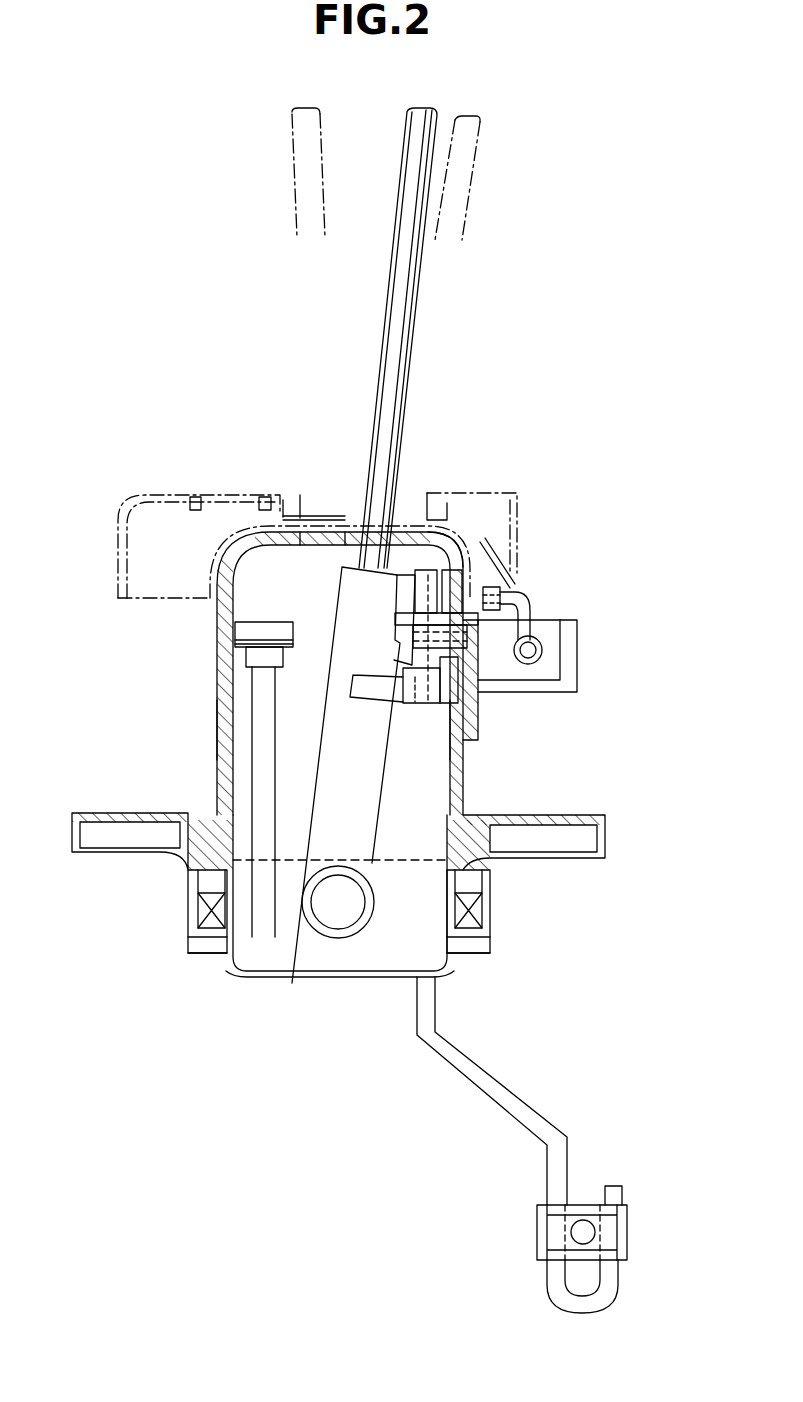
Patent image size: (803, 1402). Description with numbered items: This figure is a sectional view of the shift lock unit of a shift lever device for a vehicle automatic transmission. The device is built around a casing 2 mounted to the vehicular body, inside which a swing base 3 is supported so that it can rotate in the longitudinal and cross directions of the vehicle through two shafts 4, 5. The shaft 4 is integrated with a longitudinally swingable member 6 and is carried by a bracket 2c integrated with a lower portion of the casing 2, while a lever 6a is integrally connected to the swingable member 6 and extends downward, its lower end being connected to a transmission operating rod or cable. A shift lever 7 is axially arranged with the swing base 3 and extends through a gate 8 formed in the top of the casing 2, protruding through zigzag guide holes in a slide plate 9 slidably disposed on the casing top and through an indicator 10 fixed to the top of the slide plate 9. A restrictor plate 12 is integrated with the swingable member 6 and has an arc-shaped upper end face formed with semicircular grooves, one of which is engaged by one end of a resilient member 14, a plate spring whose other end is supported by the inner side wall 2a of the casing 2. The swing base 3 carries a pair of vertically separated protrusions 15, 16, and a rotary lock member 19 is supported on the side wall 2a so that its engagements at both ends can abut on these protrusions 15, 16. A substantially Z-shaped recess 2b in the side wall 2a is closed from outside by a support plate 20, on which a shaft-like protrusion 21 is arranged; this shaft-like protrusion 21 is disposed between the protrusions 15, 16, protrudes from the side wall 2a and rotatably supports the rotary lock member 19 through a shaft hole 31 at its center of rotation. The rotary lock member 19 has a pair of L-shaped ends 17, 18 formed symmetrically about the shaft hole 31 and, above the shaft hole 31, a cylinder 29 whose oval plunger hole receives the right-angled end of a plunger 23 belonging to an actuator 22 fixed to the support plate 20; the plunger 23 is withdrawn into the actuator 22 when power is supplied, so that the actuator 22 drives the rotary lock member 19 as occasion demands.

The casing 2 is at (212, 665).
The side wall 2a is at (222, 735).
The recess 2b is at (455, 570).
The bracket 2c is at (222, 955).
The swing base 3 is at (292, 983).
The shaft 4 is at (210, 888).
The shaft 5 is at (335, 915).
The longitudinally swingable member 6 is at (385, 965).
The lever 6a is at (527, 1115).
The shift lever 7 is at (405, 300).
The gate 8 is at (423, 640).
The slide plate 9 is at (480, 542).
The indicator 10 is at (150, 495).
The restrictor plate 12 is at (256, 780).
The resilient member 14 is at (238, 640).
The protrusion 15 is at (410, 585).
The protrusion 16 is at (410, 695).
The L-shaped end 17 is at (455, 588).
The L-shaped end 18 is at (448, 673).
The rotary lock member 19 is at (435, 575).
The support plate 20 is at (472, 723).
The shaft-like protrusion 21 is at (355, 520).
The actuator 22 is at (550, 630).
The plunger 23 is at (500, 598).
The cylinder 29 is at (540, 655).
The shaft hole 31 is at (340, 520).